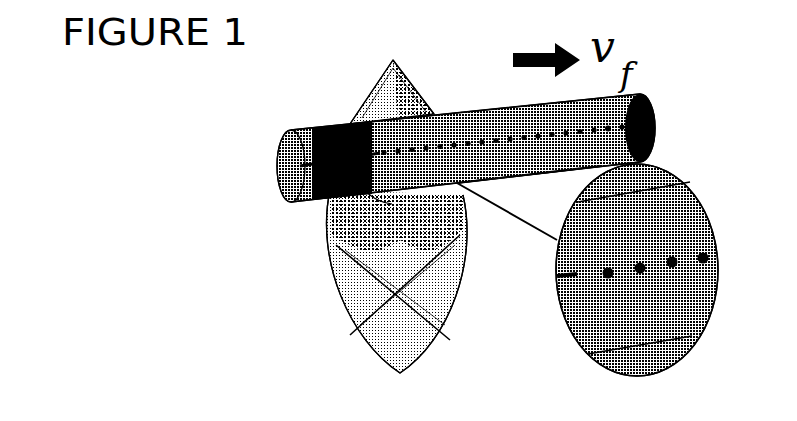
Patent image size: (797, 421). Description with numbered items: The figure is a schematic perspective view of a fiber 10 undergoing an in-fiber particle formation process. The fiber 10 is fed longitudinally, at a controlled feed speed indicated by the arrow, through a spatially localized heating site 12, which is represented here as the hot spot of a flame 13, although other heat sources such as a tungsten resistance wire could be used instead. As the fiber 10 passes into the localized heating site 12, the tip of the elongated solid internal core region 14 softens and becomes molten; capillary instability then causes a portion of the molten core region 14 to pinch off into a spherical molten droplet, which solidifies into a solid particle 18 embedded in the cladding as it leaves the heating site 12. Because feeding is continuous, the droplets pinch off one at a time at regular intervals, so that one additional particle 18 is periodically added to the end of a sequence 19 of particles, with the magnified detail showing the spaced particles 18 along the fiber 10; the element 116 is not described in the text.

The fiber 10 is at (282, 137).
The localized heating site 12 is at (360, 113).
The flame 13 is at (345, 257).
The internal fiber core region 14 is at (306, 200).
The sequence of particles 19 is at (606, 116).
The tube end 116 is at (648, 138).
The solid particle 18 is at (615, 279).